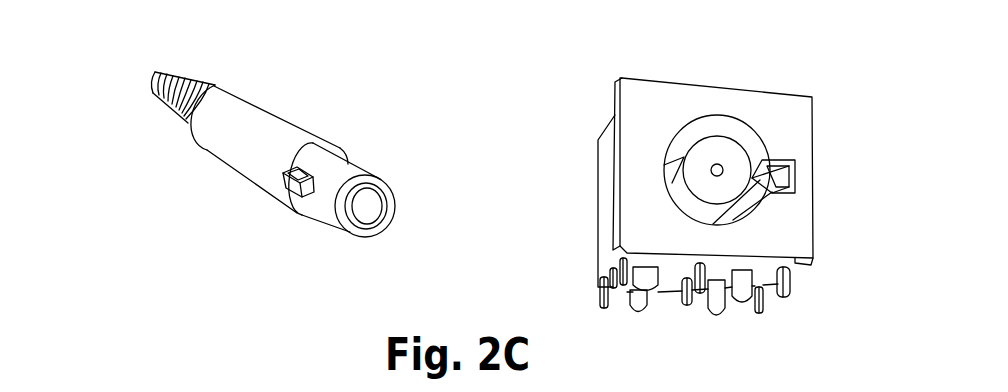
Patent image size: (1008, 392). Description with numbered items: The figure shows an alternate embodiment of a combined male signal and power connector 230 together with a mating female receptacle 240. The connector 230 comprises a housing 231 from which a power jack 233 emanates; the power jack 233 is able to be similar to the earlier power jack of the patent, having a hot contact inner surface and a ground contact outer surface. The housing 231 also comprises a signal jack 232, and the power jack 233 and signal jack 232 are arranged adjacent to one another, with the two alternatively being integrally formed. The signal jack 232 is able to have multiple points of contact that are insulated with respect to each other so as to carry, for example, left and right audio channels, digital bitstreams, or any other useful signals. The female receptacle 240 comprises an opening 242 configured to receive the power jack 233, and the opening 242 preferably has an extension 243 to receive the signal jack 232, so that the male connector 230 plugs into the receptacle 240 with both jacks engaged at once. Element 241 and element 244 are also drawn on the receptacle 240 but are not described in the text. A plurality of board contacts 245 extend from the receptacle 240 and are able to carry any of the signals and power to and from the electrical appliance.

The combined male signal and power connector 230 is at (324, 58).
The housing 231 is at (237, 157).
The signal jack 232 is at (290, 186).
The power jack 233 is at (367, 178).
The female receptacle 240 is at (787, 60).
The housing 241 is at (612, 137).
The opening 242 is at (703, 138).
The extension 243 is at (772, 182).
The inner disc 244 is at (700, 177).
The board contacts 245 is at (782, 299).